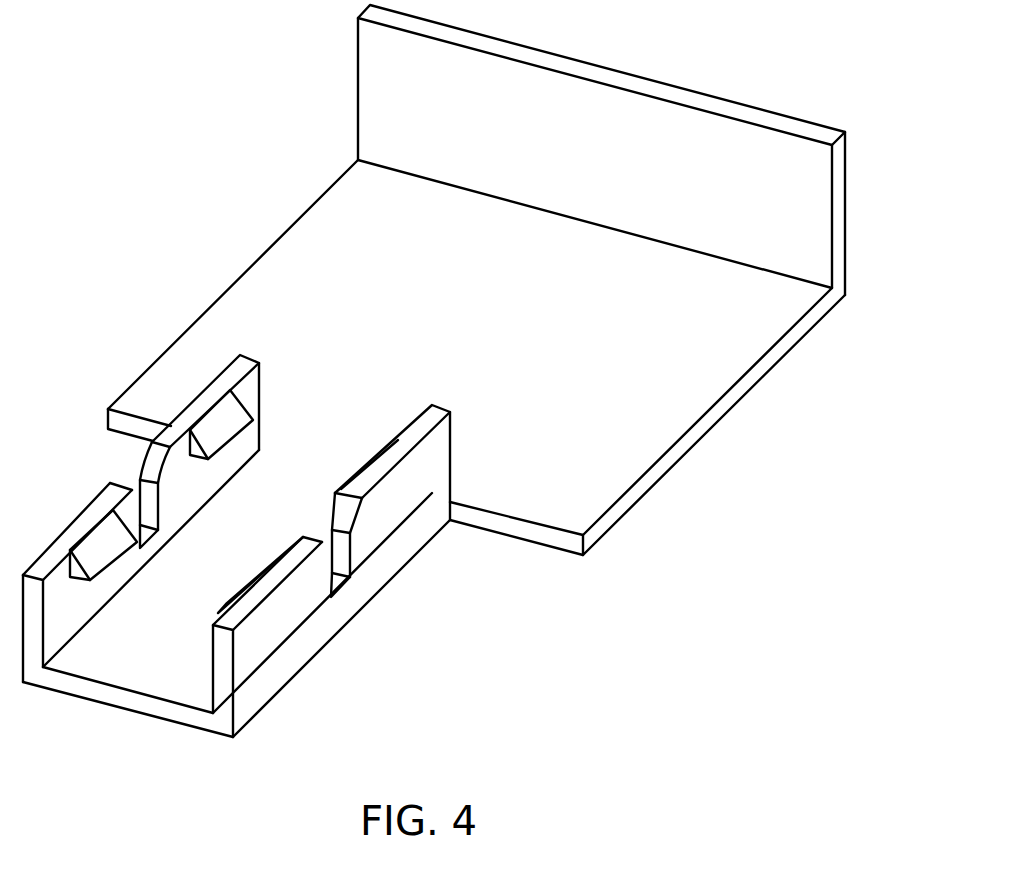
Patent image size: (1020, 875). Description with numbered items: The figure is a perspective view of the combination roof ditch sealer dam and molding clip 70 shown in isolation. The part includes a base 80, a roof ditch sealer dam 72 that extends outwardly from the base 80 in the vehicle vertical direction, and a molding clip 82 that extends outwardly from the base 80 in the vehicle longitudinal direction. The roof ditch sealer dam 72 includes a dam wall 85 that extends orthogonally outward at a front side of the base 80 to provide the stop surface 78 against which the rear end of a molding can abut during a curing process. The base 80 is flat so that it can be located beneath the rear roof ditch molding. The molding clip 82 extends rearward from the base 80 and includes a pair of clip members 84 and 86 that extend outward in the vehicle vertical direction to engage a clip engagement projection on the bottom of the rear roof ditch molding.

The combination roof ditch sealer dam and molding clip 70 is at (146, 224).
The roof ditch sealer dam 72 is at (815, 243).
The stop surface 78 is at (850, 173).
The base 80 is at (635, 448).
The molding clip 82 is at (137, 678).
The clip member 84 is at (55, 553).
The dam wall 85 is at (368, 91).
The clip member 86 is at (293, 662).